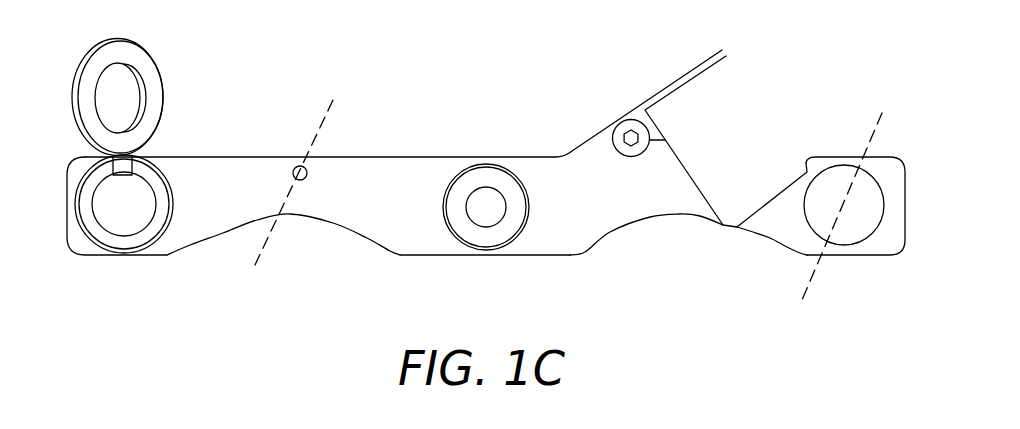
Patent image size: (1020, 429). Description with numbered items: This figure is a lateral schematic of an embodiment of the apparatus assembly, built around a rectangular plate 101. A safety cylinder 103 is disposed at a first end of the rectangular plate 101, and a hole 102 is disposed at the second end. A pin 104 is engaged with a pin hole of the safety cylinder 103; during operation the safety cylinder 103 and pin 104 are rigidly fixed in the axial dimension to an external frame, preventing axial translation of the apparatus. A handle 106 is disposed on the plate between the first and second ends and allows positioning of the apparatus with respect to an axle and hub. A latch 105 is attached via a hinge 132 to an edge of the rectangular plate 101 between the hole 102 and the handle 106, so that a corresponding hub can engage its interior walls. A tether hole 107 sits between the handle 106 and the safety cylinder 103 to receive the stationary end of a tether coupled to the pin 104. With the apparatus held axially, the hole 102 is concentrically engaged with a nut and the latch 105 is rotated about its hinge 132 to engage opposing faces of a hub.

The rectangular plate 101 is at (417, 170).
The hole 102 is at (855, 230).
The safety cylinder 103 is at (130, 215).
The pin 104 is at (138, 63).
The latch 105 is at (687, 98).
The handle 106 is at (480, 215).
The tether hole 107 is at (280, 126).
The hinge 132 is at (599, 113).